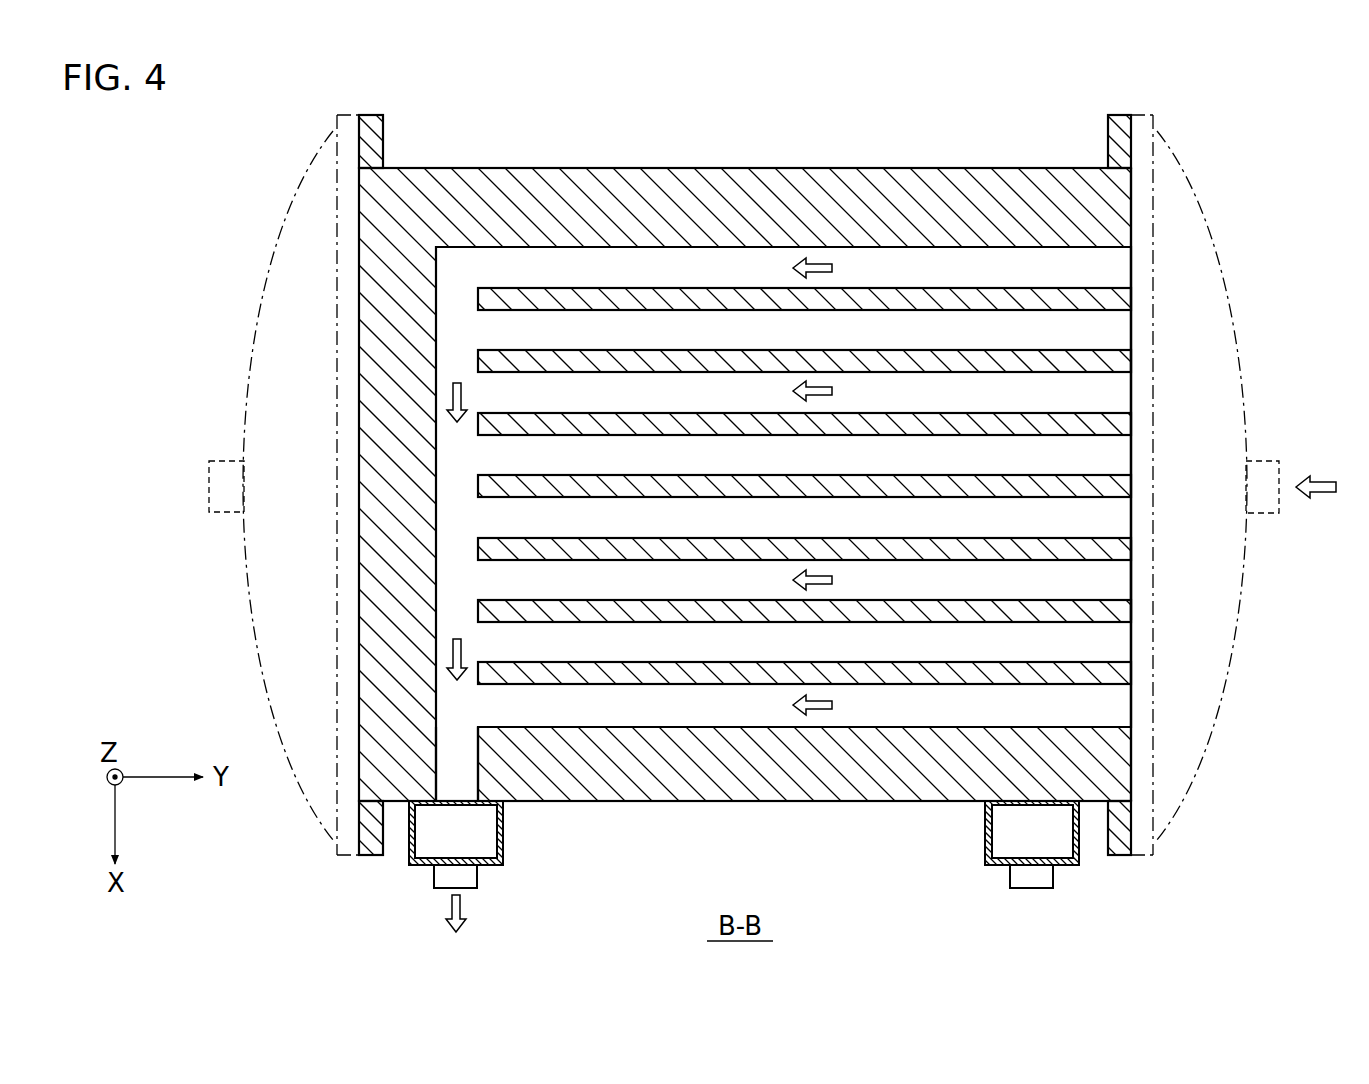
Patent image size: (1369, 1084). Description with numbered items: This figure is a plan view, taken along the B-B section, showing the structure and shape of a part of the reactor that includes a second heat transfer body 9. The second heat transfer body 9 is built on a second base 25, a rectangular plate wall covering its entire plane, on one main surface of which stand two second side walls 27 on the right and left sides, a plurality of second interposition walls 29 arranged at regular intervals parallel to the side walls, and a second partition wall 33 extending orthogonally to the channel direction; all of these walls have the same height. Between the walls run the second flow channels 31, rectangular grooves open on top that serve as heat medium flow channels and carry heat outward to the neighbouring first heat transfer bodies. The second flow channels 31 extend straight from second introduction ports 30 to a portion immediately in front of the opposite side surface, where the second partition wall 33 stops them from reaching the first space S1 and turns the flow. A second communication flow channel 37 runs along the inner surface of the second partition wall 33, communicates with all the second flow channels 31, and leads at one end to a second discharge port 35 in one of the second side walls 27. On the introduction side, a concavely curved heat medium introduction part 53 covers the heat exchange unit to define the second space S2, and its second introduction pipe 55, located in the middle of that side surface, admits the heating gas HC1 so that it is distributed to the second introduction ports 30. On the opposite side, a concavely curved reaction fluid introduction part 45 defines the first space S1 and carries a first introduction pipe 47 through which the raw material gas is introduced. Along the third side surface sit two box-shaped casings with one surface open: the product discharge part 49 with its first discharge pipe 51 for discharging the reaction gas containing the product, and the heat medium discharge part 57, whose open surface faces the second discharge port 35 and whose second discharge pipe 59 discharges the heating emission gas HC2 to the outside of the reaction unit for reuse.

The second heat transfer body 9 is at (836, 168).
The second base 25 is at (1125, 458).
The second side wall 27 is at (596, 170).
The second interposition wall 29 is at (700, 291).
The second introduction port 30 is at (1130, 578).
The second flow channel 31 is at (660, 393).
The second partition wall 33 is at (370, 580).
The second discharge port 35 is at (470, 765).
The second communication flow channel 37 is at (450, 515).
The reaction fluid introduction part 45 is at (270, 222).
The first introduction pipe 47 is at (222, 460).
The product discharge part 49 is at (988, 828).
The first discharge pipe 51 is at (1010, 878).
The heat medium introduction part 53 is at (1225, 222).
The second introduction pipe 55 is at (1275, 459).
The heat medium discharge part 57 is at (505, 826).
The second discharge pipe 59 is at (478, 876).
The first space S1 is at (270, 547).
The second space S2 is at (1212, 618).
The heating gas HC1 is at (1314, 475).
The heating emission gas HC2 is at (445, 910).